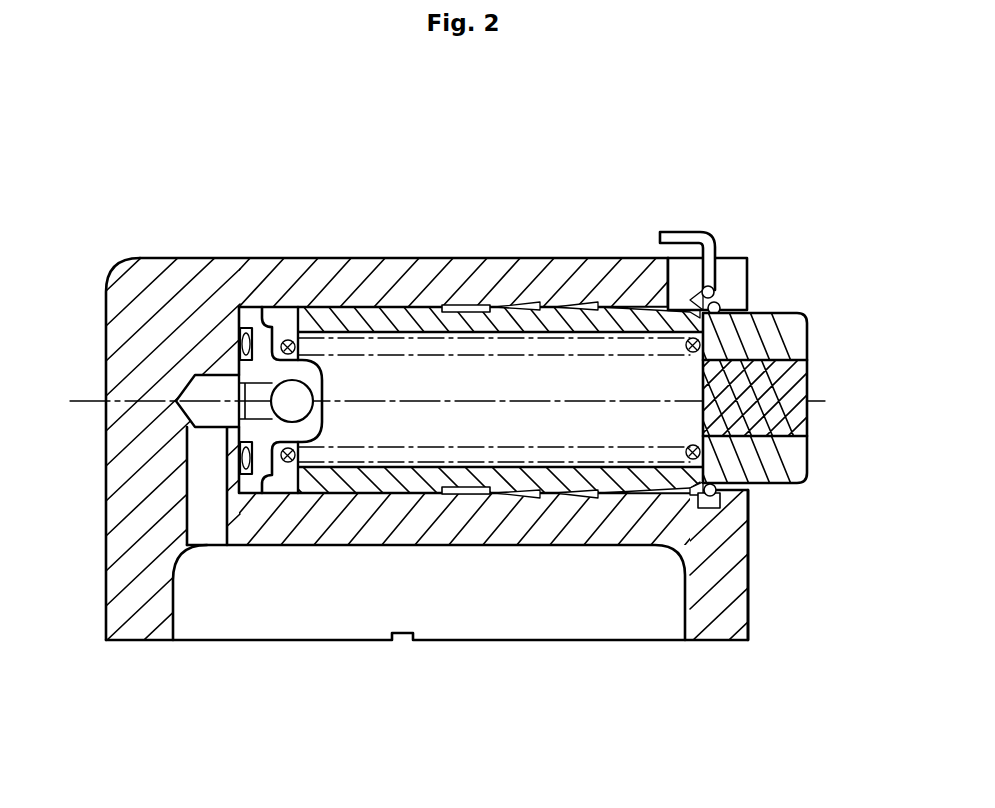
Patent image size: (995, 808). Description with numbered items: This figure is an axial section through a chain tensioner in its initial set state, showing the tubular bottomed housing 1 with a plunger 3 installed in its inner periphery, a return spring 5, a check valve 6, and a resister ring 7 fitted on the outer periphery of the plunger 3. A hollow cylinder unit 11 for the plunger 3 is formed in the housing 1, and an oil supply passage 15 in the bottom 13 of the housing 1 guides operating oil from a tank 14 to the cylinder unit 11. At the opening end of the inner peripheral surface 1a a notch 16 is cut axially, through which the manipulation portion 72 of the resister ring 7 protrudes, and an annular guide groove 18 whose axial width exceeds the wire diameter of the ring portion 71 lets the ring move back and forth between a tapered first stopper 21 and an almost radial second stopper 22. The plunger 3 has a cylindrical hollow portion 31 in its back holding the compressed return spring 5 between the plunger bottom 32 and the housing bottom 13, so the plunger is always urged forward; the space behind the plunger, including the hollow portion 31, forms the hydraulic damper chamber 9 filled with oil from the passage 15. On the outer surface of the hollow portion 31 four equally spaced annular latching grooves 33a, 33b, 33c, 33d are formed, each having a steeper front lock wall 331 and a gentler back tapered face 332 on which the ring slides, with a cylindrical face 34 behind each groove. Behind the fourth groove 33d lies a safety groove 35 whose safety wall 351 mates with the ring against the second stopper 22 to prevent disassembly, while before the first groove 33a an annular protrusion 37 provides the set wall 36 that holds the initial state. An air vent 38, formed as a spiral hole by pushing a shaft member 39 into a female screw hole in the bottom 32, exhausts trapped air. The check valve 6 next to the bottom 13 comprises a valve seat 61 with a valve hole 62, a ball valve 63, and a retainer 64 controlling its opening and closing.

The housing 1 is at (124, 255).
The inner peripheral surface of the housing 1a is at (343, 306).
The plunger 3 is at (760, 352).
The return spring 5 is at (366, 458).
The check valve 6 is at (338, 373).
The resister ring 7 is at (675, 220).
The hydraulic damper chamber 9 is at (412, 416).
The cylinder unit 11 is at (288, 320).
The bottom of the housing 13 is at (198, 257).
The tank 14 is at (237, 627).
The oil supply passage 15 is at (200, 456).
The notch 16 is at (742, 270).
The guide groove 18 is at (717, 497).
The first stopper 21 is at (666, 258).
The second stopper 22 is at (800, 375).
The hollow portion 31 is at (403, 318).
The bottom of the plunger 32 is at (773, 470).
The first latching groove 33a is at (658, 496).
The second latching groove 33b is at (604, 496).
The third latching groove 33c is at (562, 496).
The fourth latching groove 33d is at (518, 496).
The lock wall 331 is at (582, 306).
The tapered face 332 is at (560, 306).
The cylindrical face 34 is at (503, 306).
The safety groove 35 is at (462, 495).
The safety wall 351 is at (470, 304).
The set wall 36 is at (753, 545).
The annular protrusion 37 is at (706, 510).
The air vent 38 is at (755, 383).
The shaft member 39 is at (800, 428).
The valve seat 61 is at (257, 322).
The valve hole 62 is at (262, 383).
The valve 63 is at (140, 545).
The retainer 64 is at (330, 440).
The ring portion 71 is at (707, 314).
The manipulation portion 72 is at (704, 234).